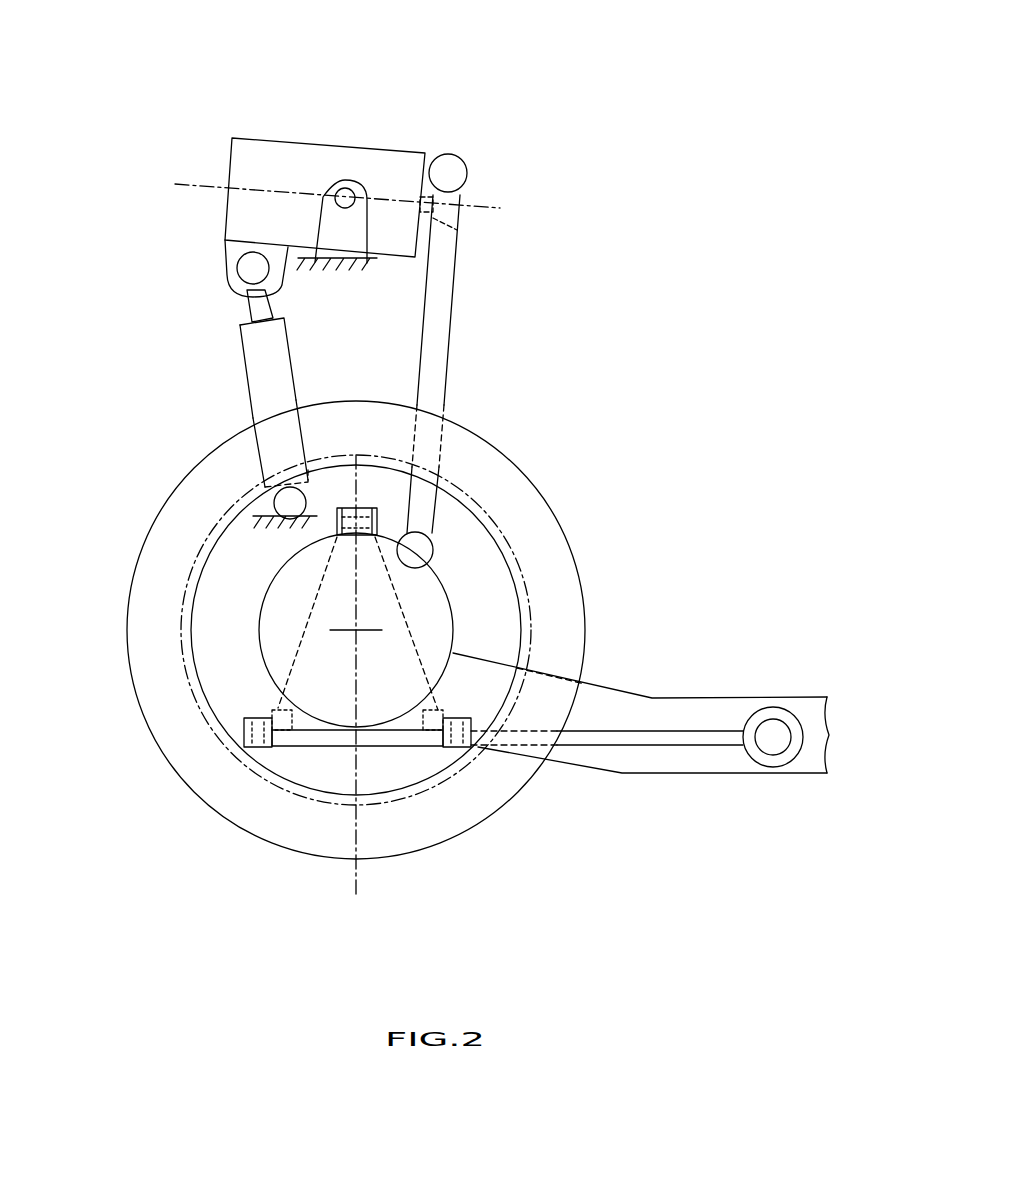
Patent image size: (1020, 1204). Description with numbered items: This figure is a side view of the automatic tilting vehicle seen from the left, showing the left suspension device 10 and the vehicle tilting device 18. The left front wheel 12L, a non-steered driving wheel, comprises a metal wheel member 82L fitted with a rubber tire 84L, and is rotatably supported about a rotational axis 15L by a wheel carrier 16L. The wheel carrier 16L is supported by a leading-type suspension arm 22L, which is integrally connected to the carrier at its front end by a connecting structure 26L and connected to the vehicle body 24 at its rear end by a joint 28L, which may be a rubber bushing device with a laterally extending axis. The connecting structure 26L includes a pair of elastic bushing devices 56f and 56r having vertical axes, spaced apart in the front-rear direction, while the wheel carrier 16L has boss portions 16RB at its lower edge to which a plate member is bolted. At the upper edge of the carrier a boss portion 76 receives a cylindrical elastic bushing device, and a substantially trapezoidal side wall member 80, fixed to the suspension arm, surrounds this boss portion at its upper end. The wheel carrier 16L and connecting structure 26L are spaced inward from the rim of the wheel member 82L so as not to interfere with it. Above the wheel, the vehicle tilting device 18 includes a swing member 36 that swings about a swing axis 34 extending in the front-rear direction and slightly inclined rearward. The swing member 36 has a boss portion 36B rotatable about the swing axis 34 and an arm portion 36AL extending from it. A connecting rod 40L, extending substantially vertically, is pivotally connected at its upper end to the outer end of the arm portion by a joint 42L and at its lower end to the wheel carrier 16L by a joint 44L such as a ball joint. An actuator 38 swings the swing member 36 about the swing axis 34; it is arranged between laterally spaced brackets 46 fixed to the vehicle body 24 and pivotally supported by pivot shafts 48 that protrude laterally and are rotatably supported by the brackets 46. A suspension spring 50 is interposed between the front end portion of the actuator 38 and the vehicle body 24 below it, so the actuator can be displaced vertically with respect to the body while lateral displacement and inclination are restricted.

The suspension device 10 is at (222, 326).
The front wheel 12L is at (180, 480).
The rotational axis 15L is at (357, 628).
The wheel carrier 16L is at (260, 638).
The boss portions 16RB is at (280, 715).
The vehicle tilting device 18 is at (497, 93).
The suspension arm 22L is at (660, 725).
The vehicle body 24 is at (318, 270).
The connecting structure 26L is at (292, 770).
The joint 28L is at (773, 707).
The swing axis 34 is at (197, 183).
The swing member 36 is at (478, 162).
The arm portion 36AL is at (462, 200).
The boss portion 36B is at (457, 230).
The actuator 38 is at (255, 157).
The connecting rod 40L is at (445, 330).
The joint 42L is at (443, 163).
The joint 44L is at (432, 550).
The brackets 46 is at (348, 238).
The pivot shafts 48 is at (343, 186).
The suspension spring 50 is at (252, 368).
The elastic bushing device 56f is at (220, 750).
The elastic bushing device 56r is at (460, 740).
The boss portion 76 is at (350, 505).
The side wall member 80 is at (300, 628).
The wheel member 82L is at (187, 580).
The tire 84L is at (505, 475).